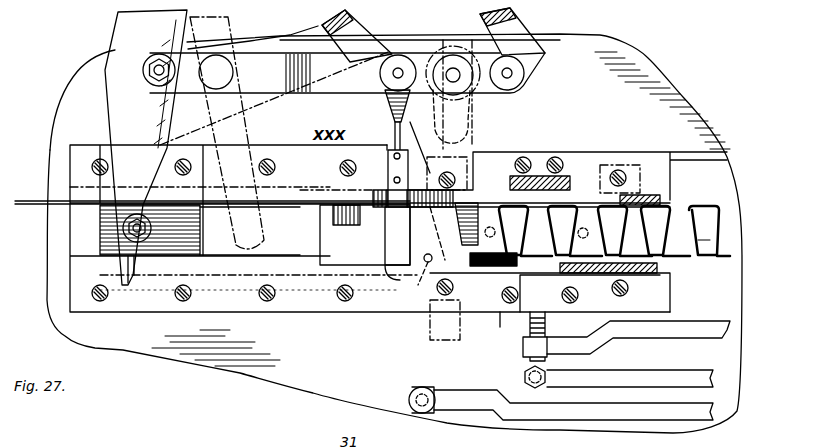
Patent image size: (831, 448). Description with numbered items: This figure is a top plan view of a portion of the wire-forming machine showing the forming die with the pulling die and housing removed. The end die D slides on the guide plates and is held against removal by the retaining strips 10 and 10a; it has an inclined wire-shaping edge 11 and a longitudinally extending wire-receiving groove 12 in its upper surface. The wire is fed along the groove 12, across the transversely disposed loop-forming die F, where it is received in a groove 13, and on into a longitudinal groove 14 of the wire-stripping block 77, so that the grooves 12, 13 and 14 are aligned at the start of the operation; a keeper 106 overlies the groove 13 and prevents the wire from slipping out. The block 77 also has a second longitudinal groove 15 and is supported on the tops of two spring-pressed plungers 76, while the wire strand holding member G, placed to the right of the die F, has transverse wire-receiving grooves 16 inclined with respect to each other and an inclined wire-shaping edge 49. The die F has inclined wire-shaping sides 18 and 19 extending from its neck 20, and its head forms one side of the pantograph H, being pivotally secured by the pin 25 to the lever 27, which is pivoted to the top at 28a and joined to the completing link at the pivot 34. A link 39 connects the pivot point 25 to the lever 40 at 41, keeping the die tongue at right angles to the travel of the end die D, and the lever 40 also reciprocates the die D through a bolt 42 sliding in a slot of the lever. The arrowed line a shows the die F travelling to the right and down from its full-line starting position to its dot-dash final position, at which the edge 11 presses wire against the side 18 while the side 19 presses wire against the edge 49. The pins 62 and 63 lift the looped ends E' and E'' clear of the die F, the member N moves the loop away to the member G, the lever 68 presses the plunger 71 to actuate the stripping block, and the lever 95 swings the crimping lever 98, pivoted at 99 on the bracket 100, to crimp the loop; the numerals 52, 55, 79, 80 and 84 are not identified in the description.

The retaining strip 10 is at (286, 130).
The retaining strip 10a is at (330, 311).
The inclined wire-shaping edge 11 is at (325, 228).
The wire-receiving groove 12 is at (112, 206).
The groove 13 is at (402, 160).
The longitudinal groove 14 is at (583, 205).
The longitudinal groove 15 is at (470, 256).
The transverse wire-receiving grooves 16 is at (516, 238).
The inclined wire-shaping side 18 is at (387, 139).
The inclined wire-shaping side 19 is at (402, 142).
The neck 20 is at (390, 130).
The pin 25 is at (398, 65).
The lever 27 is at (500, 54).
The pivot 28a is at (448, 55).
The pivot 34 is at (508, 75).
The link 39 is at (250, 100).
The lever 40 is at (118, 20).
The pivot connection 41 is at (150, 80).
The bolt 42 is at (135, 270).
The inclined wire-shaping edge 49 is at (448, 245).
The bus bar 52 is at (605, 420).
The terminal 55 is at (410, 396).
The pin 62 is at (413, 190).
The pin 63 is at (420, 274).
The lever 68 is at (693, 368).
The plunger 71 is at (525, 375).
The spring-pressed plungers 76 is at (484, 203).
The wire-stripping block 77 is at (512, 203).
The screw 79 is at (610, 165).
The screw 80 is at (456, 180).
The insulating strip 84 is at (540, 165).
The lever 95 is at (663, 337).
The crimping lever 98 is at (530, 320).
The pivot 99 is at (462, 118).
The bracket 100 is at (556, 314).
The keeper 106 is at (387, 157).
The end die D is at (108, 242).
The looped end E' is at (210, 189).
The looped end E'' is at (703, 232).
The loop-forming die F is at (313, 29).
The wire strand holding member G is at (560, 210).
The pantograph H is at (520, 30).
The member N is at (397, 243).
The arrowed line a is at (423, 334).